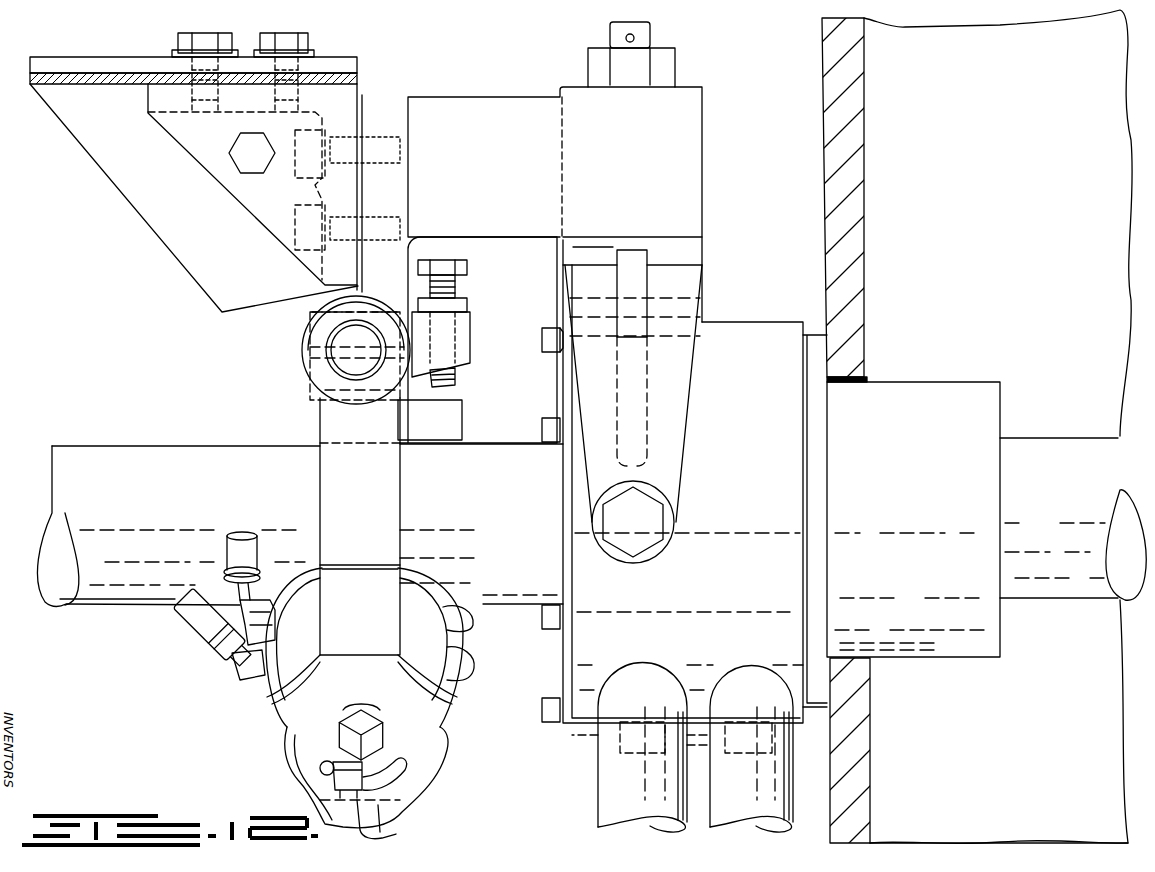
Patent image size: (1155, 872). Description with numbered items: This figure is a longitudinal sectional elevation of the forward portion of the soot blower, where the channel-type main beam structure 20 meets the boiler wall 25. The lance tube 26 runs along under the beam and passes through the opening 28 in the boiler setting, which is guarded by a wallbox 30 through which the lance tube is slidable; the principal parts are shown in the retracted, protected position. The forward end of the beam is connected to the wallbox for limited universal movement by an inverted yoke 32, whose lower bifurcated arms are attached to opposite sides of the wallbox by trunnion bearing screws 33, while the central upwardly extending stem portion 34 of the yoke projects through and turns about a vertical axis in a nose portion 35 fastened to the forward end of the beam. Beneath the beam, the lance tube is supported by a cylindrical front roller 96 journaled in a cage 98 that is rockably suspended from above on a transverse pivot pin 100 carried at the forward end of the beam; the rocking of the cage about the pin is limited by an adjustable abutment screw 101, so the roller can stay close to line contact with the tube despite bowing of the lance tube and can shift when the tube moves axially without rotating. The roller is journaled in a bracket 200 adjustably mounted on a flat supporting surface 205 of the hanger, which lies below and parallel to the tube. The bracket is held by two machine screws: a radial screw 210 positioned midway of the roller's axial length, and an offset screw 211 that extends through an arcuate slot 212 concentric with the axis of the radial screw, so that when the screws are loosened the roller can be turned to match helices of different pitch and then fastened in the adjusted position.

The main beam structure 20 is at (82, 153).
The boiler wall 25 is at (833, 193).
The lance tube 26 is at (148, 452).
The opening 28 is at (845, 385).
The wallbox 30 is at (750, 325).
The inverted yoke 32 is at (678, 405).
The trunnion bearing screws 33 is at (657, 518).
The stem portion 34 is at (652, 27).
The nose portion 35 is at (585, 161).
The roller 96 is at (407, 590).
The cage 98 is at (335, 478).
The transverse pivot pin 100 is at (348, 365).
The adjustable abutment screw 101 is at (467, 266).
The bracket 200 is at (248, 676).
The supporting surface 205 is at (367, 759).
The machine screw 210 is at (383, 684).
The screw 211 is at (360, 832).
The arcuate slot 212 is at (318, 773).